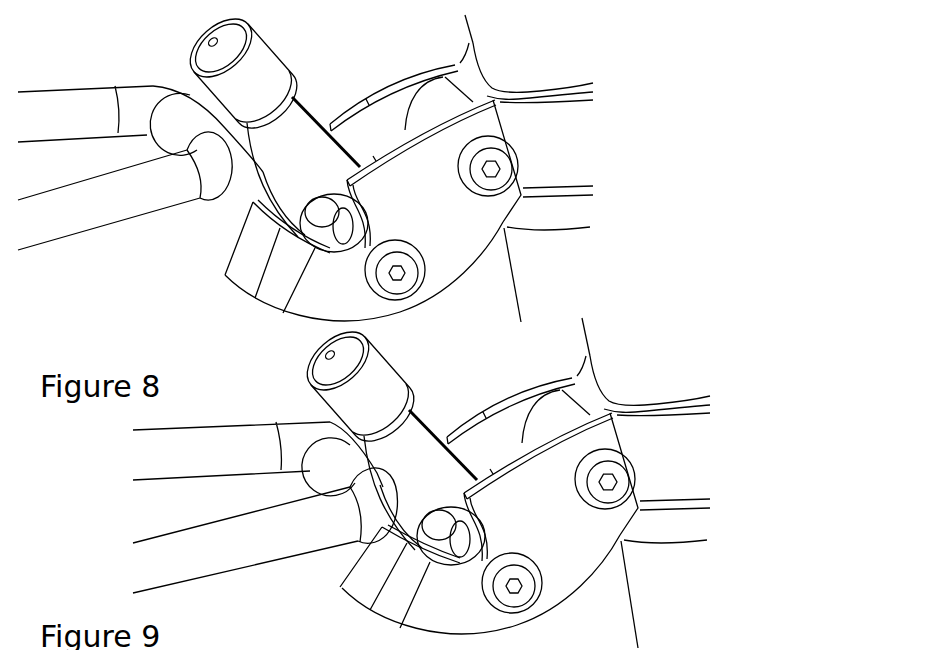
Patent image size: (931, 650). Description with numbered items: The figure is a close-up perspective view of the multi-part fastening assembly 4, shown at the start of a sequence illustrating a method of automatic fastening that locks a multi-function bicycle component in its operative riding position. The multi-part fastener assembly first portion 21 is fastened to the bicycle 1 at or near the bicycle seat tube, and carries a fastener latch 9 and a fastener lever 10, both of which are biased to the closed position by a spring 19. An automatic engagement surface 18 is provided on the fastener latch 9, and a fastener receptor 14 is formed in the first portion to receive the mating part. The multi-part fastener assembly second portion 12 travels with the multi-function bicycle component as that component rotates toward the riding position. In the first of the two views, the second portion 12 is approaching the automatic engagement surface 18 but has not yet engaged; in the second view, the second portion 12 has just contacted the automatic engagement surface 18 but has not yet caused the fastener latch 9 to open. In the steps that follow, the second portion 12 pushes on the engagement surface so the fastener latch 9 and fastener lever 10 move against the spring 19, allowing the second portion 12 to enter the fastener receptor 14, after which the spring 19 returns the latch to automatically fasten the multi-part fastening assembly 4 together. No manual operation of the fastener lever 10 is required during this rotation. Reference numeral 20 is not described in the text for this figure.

In FIG. 8, the bicycle 1 is at (588, 267).
In FIG. 8, the multi-part fastening assembly 4 is at (277, 340).
In FIG. 8, the fastener latch 9 is at (290, 217).
In FIG. 9, the fastener latch 9 is at (407, 537).
In FIG. 8, the fastener lever 10 is at (205, 88).
In FIG. 9, the fastener lever 10 is at (380, 393).
In FIG. 8, the multi-part fastener assembly second portion 12 is at (223, 193).
In FIG. 9, the multi-part fastener assembly second portion 12 is at (332, 468).
In FIG. 9, the fastener receptor 14 is at (365, 600).
In FIG. 8, the automatic engagement surface 18 is at (250, 133).
In FIG. 9, the automatic engagement surface 18 is at (362, 440).
In FIG. 8, the spring 19 is at (312, 205).
In FIG. 9, the spring 19 is at (442, 550).
In FIG. 8, the mounting bracket 20 is at (437, 222).
In FIG. 9, the mounting bracket 20 is at (526, 483).
In FIG. 8, the multi-part fastener assembly first portion 21 is at (222, 197).